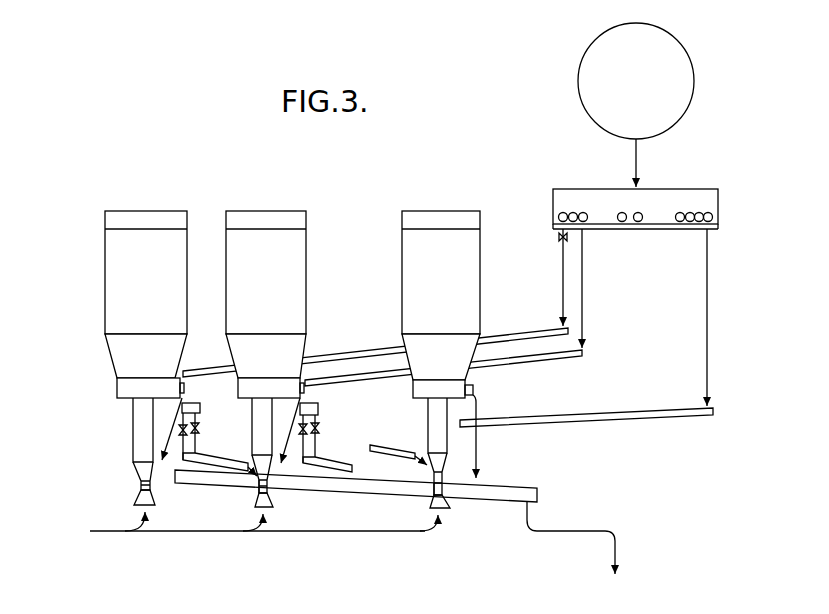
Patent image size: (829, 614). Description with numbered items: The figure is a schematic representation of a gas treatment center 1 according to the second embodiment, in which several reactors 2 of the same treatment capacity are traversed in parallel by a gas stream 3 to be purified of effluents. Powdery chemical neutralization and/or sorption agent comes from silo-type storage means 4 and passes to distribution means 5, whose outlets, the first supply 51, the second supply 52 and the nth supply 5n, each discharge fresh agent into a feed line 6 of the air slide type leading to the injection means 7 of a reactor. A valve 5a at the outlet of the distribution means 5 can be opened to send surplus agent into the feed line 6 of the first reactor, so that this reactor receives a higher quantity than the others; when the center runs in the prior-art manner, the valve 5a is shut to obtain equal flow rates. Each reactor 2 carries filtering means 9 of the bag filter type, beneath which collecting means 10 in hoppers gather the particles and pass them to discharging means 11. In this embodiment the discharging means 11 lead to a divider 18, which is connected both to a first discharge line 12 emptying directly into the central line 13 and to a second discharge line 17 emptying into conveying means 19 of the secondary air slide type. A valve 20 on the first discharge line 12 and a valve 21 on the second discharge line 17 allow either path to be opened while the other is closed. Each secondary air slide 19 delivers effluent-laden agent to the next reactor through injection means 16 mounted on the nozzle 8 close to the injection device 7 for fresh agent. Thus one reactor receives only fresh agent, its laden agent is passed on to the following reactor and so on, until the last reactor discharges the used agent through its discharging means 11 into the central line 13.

The gas treatment center 1 is at (707, 165).
The reactors 2 is at (122, 285).
The gas stream 3 is at (263, 536).
The storage means 4 is at (575, 72).
The distribution means 5 is at (720, 212).
The valve 5a is at (570, 240).
The first supply 51 is at (562, 272).
The second supply 52 is at (583, 302).
The nth supply 5n is at (708, 302).
The feed line 6 is at (560, 330).
The injection means 7 is at (181, 399).
The nozzle 8 is at (136, 485).
The filtering means 9 is at (137, 229).
The collecting means 10 is at (116, 390).
The discharging means 11 is at (181, 392).
The first discharge line 12 is at (152, 456).
The central line 13 is at (370, 492).
The injection means for laden agent 16 is at (258, 489).
The second discharge line 17 is at (197, 418).
The divider 18 is at (191, 404).
The conveying means 19 is at (208, 484).
The valve of first discharge line 20 is at (180, 430).
The valve of second discharge line 21 is at (198, 431).